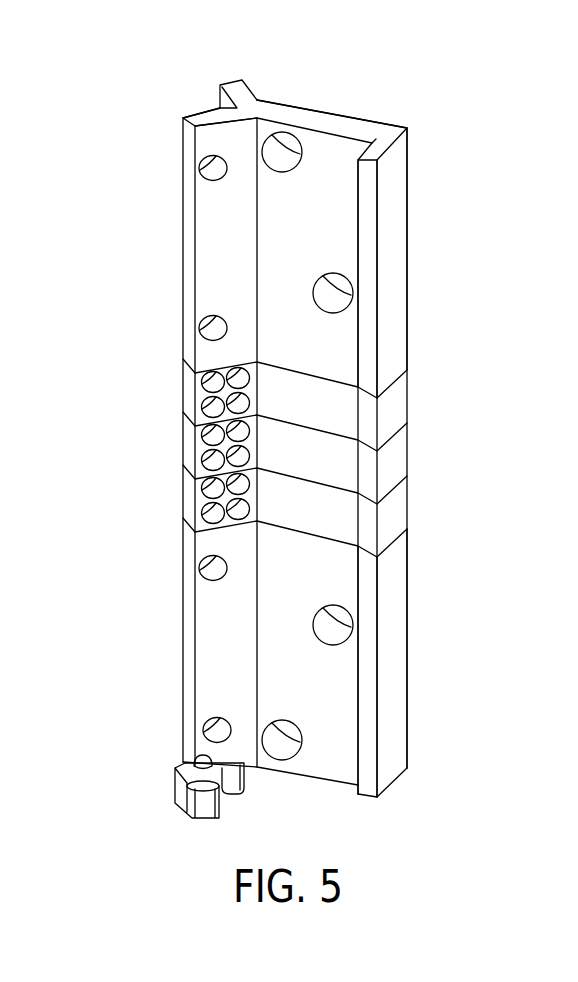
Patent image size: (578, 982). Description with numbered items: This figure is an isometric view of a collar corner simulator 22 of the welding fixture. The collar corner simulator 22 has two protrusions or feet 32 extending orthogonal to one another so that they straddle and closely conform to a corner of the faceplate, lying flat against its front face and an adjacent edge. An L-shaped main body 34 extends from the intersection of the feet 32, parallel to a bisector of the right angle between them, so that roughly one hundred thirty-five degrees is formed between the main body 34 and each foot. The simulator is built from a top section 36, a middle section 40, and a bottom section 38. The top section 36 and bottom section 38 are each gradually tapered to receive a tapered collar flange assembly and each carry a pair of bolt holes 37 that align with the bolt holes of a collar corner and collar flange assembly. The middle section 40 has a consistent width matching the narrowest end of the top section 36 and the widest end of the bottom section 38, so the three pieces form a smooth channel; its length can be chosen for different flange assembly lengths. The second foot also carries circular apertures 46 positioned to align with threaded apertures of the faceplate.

The collar corner simulator 22 is at (322, 418).
The feet 32 is at (220, 92).
The L-shaped main body 34 is at (332, 117).
The top section 36 is at (420, 230).
The bolt holes 37 is at (333, 298).
The bottom section 38 is at (420, 644).
The middle section 40 is at (420, 434).
The circular aperture 46 is at (202, 325).